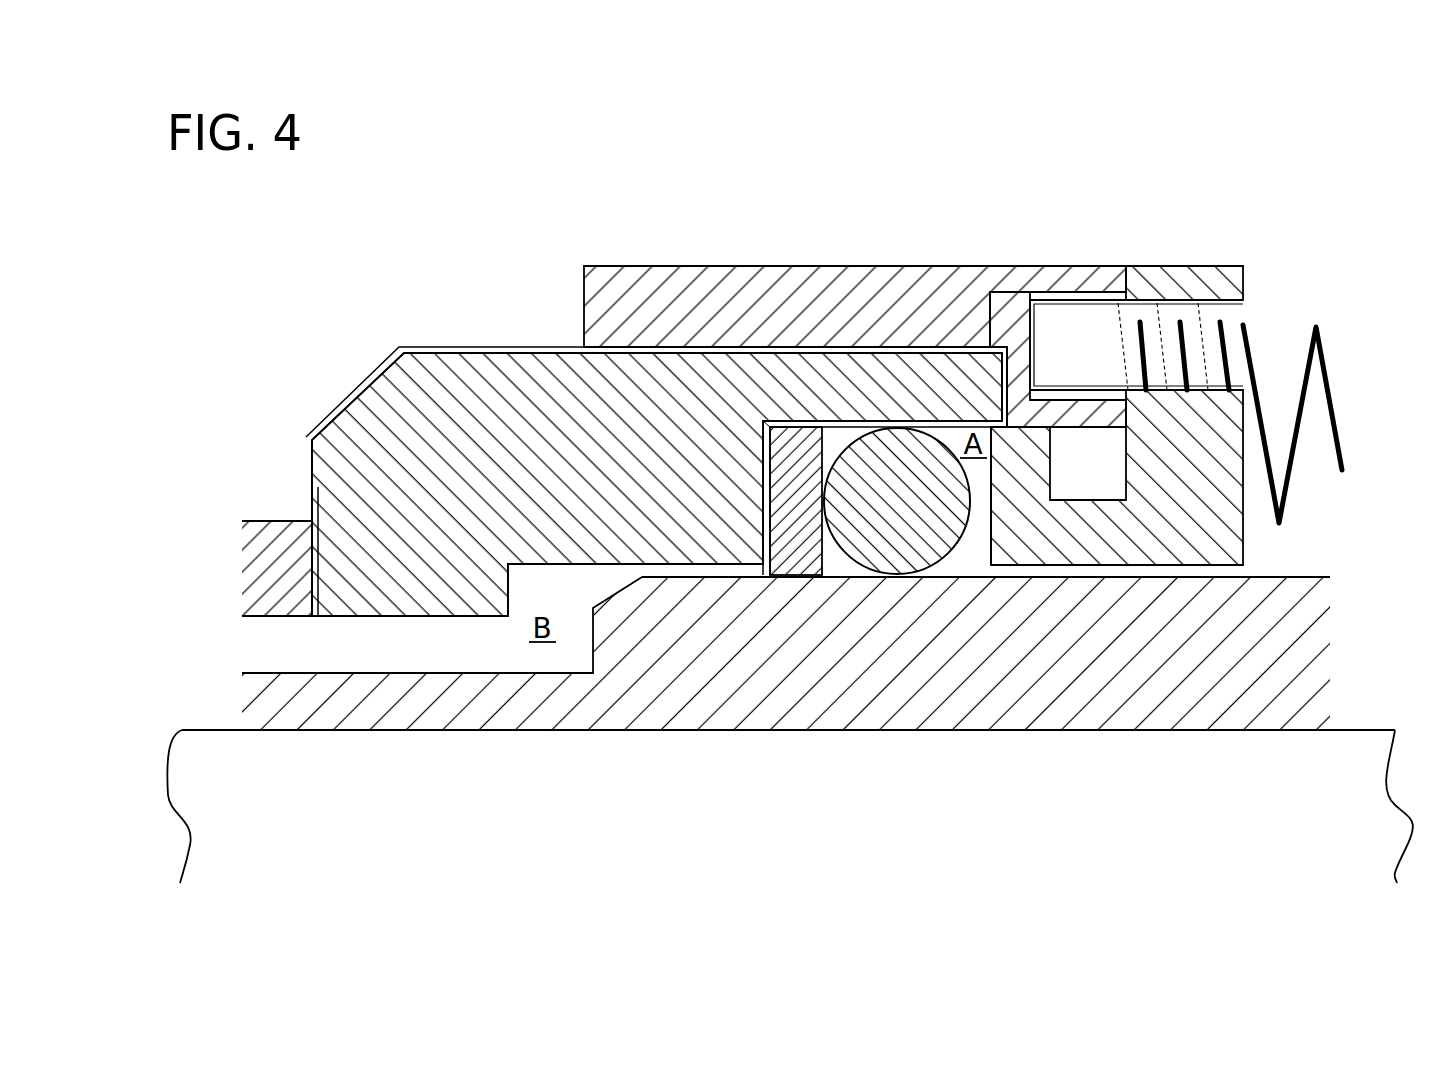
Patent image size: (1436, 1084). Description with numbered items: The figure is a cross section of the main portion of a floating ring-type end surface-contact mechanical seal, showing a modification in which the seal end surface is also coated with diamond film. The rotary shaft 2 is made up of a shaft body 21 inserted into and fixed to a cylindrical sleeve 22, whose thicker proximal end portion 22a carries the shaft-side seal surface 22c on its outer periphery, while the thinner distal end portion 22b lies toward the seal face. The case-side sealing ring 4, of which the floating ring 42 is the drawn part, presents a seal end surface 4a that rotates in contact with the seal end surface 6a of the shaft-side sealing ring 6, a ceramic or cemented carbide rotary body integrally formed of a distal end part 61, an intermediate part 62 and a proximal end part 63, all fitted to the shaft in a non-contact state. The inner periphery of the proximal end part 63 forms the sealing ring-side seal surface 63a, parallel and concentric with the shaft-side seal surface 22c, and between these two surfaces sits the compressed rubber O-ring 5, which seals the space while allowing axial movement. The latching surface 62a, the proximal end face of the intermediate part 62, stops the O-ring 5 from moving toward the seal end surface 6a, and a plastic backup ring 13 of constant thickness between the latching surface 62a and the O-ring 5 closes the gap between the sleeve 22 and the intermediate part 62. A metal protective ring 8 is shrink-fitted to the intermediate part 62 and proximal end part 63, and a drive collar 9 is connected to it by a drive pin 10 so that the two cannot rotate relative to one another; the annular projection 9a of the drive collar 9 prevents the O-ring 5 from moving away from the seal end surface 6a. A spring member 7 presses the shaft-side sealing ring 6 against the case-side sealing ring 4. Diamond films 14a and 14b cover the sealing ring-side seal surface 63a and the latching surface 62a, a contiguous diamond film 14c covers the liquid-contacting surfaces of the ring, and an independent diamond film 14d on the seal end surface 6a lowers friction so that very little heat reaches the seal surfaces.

The rotary shaft 2 is at (1309, 570).
The case-side sealing ring 4 is at (475, 569).
The seal end surface 4a is at (316, 566).
The floating ring 42 is at (261, 564).
The O-ring 5 is at (873, 542).
The shaft-side sealing ring 6 is at (640, 510).
The seal end surface 6a is at (310, 592).
The distal end part 61 is at (430, 600).
The intermediate part 62 is at (620, 548).
The latching surface 62a is at (774, 515).
The proximal end part 63 is at (793, 362).
The sealing ring-side seal surface 63a is at (967, 347).
The spring member 7 is at (1330, 383).
The protective ring 8 is at (922, 297).
The drive collar 9 is at (1075, 479).
The annular projection 9a is at (987, 509).
The drive pin 10 is at (1078, 317).
The backup ring 13 is at (802, 552).
The polycrystalline diamond film 14a is at (857, 418).
The polycrystalline diamond film 14b is at (763, 446).
The diamond film 14c is at (522, 349).
The diamond film 14d is at (310, 522).
The shaft body 21 is at (205, 728).
The sleeve 22 is at (786, 700).
The proximal end portion 22a is at (972, 706).
The distal end portion 22b is at (378, 728).
The shaft-side seal surface 22c is at (967, 572).